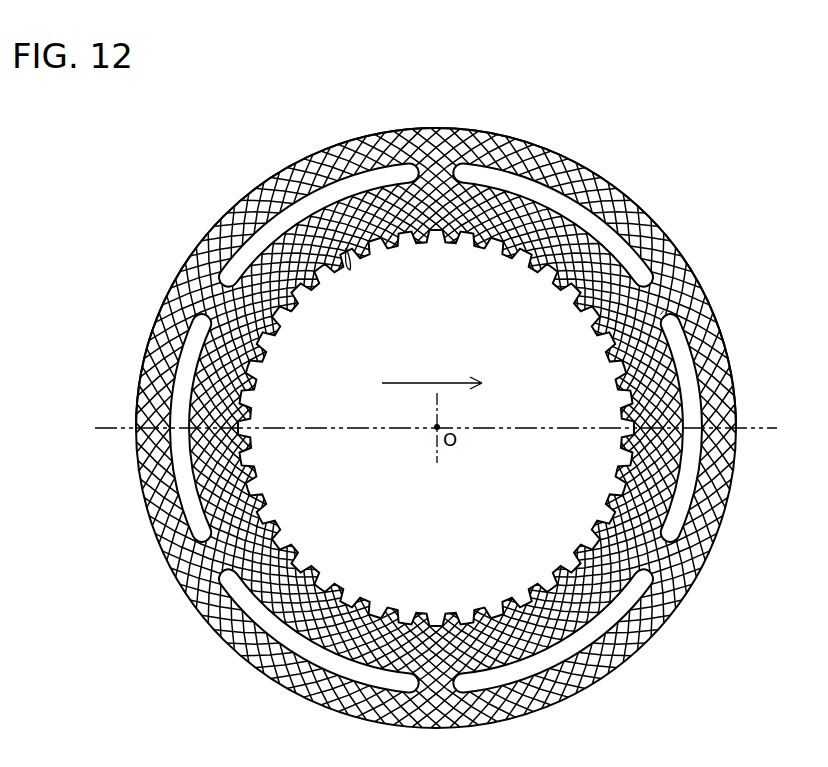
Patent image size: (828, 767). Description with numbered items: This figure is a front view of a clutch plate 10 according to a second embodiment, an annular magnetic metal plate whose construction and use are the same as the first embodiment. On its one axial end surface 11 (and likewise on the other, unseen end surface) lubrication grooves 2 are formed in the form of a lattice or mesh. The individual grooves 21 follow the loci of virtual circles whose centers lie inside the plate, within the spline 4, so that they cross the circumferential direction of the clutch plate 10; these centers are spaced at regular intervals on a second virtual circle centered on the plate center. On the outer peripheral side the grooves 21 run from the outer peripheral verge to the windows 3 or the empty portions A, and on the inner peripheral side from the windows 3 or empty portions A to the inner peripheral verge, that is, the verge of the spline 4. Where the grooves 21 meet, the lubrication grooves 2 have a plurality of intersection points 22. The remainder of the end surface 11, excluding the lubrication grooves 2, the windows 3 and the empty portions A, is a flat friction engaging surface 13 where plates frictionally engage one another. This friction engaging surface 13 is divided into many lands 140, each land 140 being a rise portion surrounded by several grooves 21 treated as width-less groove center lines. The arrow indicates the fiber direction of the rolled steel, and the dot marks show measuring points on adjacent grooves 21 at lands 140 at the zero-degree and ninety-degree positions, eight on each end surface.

The lubrication grooves 2 is at (445, 125).
The grooves 21 is at (393, 128).
The intersection points 22 is at (373, 130).
The windows 3 is at (490, 170).
The spline 4 is at (332, 198).
The clutch plate 10 is at (728, 108).
The axial end surface 11 is at (537, 138).
The friction engaging surface 13 is at (582, 168).
The lands 140 is at (630, 205).
The empty portions A is at (663, 298).